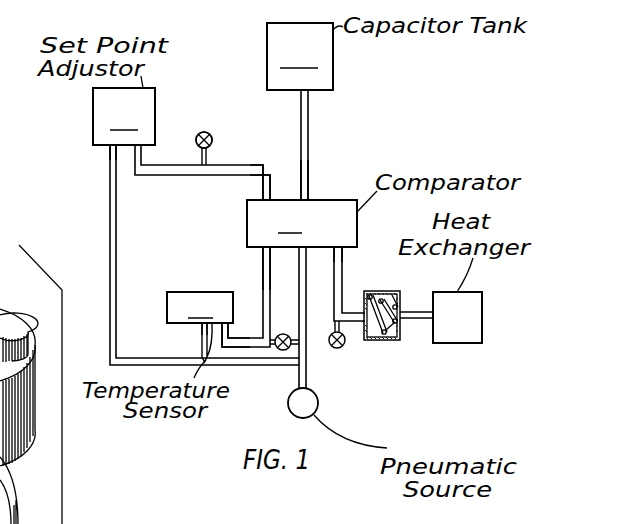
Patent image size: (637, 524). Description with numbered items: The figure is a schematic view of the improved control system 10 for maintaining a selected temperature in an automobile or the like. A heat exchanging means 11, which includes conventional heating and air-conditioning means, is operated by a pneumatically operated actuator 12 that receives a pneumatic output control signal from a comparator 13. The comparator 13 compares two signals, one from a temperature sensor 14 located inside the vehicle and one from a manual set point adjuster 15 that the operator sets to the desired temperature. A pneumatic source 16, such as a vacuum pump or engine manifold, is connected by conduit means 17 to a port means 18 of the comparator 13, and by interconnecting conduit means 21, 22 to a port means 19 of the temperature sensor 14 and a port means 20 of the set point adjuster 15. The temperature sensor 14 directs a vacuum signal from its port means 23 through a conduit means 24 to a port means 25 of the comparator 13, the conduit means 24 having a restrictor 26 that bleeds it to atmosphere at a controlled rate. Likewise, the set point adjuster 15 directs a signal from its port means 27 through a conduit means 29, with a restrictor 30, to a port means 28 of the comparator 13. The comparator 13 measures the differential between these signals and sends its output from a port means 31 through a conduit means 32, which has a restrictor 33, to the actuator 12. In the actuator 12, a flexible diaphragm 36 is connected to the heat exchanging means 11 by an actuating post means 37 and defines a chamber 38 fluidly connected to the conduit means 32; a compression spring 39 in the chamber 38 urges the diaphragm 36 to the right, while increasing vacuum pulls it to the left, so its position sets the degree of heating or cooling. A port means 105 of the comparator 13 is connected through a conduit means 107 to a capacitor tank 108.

The control system 10 is at (388, 90).
The heat exchanging means 11 is at (457, 317).
The pneumatically operated actuator 12 is at (396, 342).
The comparator 13 is at (302, 223).
The temperature sensor 14 is at (200, 307).
The set point adjuster 15 is at (124, 116).
The pneumatic source 16 is at (303, 403).
The conduit means 17 is at (307, 368).
The port means 18 is at (271, 250).
The port means 19 is at (200, 323).
The port means 20 is at (109, 151).
The conduit means 21 is at (198, 342).
The conduit means 22 is at (109, 209).
The port means 23 is at (227, 330).
The conduit means 24 is at (263, 273).
The port means 25 is at (262, 250).
The restrictor 26 is at (283, 350).
The port means 27 is at (143, 157).
The port means 28 is at (264, 198).
The conduit means 29 is at (163, 176).
The restrictor 30 is at (204, 132).
The port means 31 is at (357, 249).
The conduit means 32 is at (343, 270).
The restrictor 33 is at (339, 351).
The flexible diaphragm 36 is at (398, 302).
The actuating post means 37 is at (413, 325).
The chamber 38 is at (386, 340).
The compression spring 39 is at (378, 340).
The port means 105 is at (309, 199).
The conduit means 107 is at (308, 141).
The capacitor tank 108 is at (300, 56).